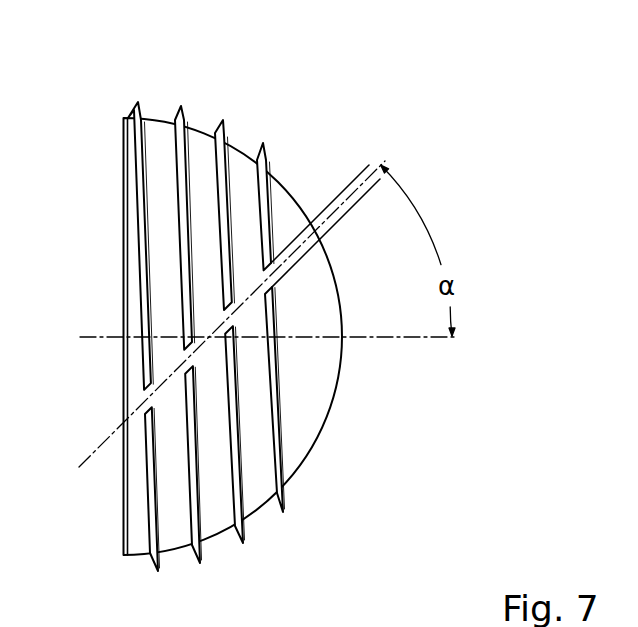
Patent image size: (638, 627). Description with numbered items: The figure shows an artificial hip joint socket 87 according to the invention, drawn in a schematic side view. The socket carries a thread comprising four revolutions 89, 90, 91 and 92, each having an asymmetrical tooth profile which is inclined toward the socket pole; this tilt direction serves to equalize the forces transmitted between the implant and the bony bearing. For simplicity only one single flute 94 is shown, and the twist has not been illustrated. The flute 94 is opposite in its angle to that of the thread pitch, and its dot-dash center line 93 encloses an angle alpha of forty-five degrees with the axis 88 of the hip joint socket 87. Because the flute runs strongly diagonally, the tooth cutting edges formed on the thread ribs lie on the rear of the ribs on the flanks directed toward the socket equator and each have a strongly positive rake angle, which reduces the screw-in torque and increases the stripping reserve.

The artificial hip joint socket 87 is at (307, 423).
The axis of the hip joint socket 88 is at (250, 338).
The first thread revolution 89 is at (141, 92).
The second thread revolution 90 is at (183, 100).
The third thread revolution 91 is at (225, 113).
The fourth thread revolution 92 is at (267, 137).
The dot-dash center line of the flute 93 is at (214, 332).
The flute 94 is at (313, 175).